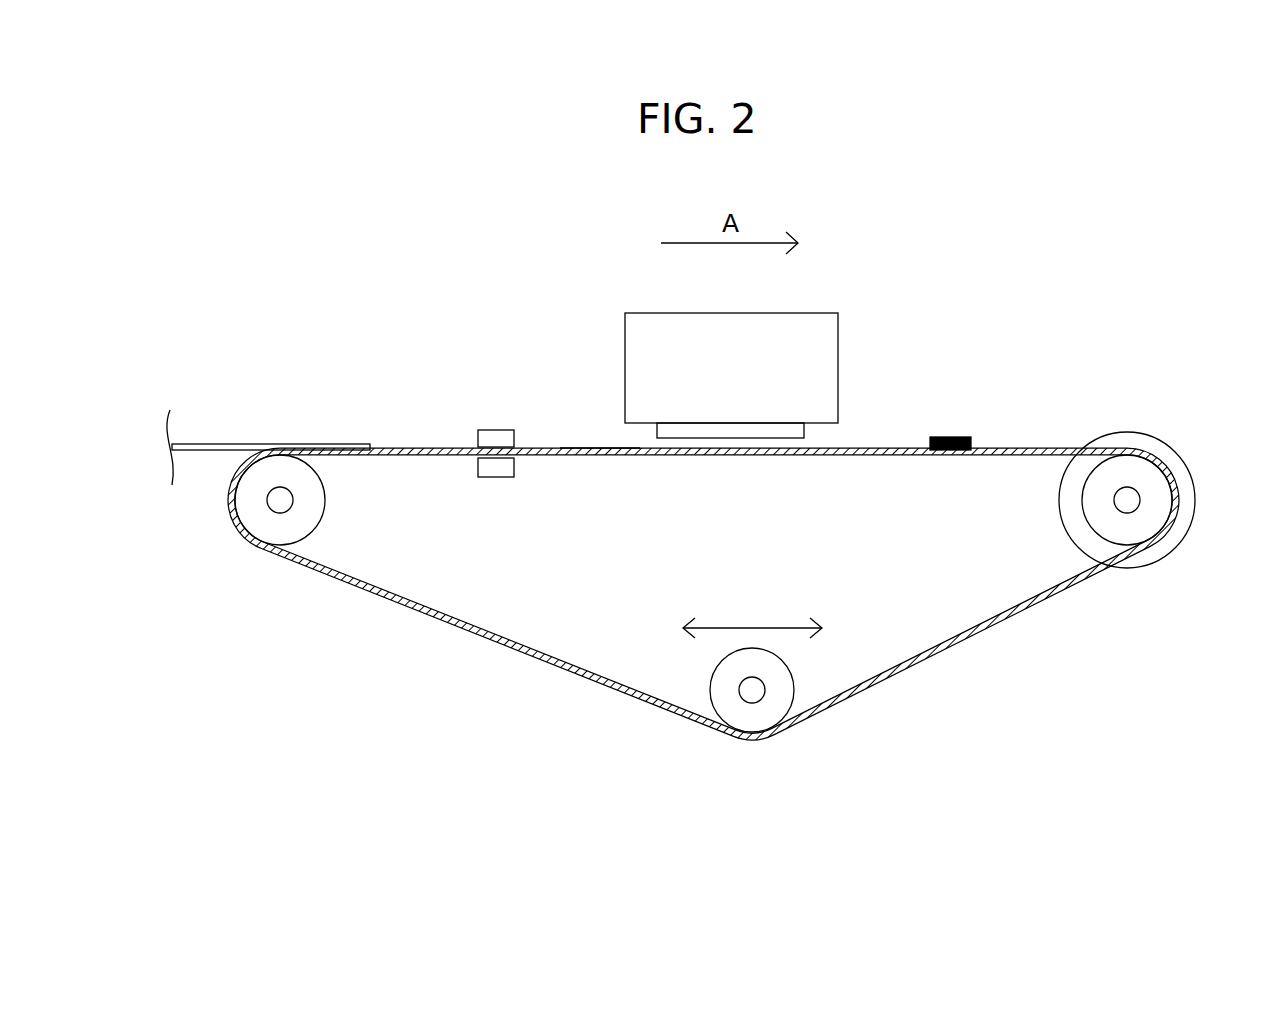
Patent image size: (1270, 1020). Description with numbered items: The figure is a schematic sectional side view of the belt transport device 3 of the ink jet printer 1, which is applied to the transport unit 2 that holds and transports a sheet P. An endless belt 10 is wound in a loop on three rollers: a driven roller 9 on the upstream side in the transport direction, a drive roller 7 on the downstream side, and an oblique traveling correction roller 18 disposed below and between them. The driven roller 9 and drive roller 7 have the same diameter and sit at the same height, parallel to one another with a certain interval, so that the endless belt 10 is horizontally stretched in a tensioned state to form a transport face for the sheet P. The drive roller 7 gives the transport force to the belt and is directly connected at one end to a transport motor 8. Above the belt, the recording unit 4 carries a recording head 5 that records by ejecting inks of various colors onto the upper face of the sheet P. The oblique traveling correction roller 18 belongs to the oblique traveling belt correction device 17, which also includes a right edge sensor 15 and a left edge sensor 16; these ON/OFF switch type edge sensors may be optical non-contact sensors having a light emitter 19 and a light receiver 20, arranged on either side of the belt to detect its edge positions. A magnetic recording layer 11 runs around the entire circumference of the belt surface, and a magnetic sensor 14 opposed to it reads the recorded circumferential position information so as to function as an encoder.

The ink jet printer 1 is at (252, 257).
The transport unit 2 is at (252, 257).
The belt transport device 3 is at (276, 282).
The recording unit 4 is at (806, 320).
The recording head 5 is at (740, 350).
The drive roller 7 is at (1092, 523).
The transport motor 8 is at (1183, 533).
The driven roller 9 is at (325, 498).
The endless belt 10 is at (529, 664).
The magnetic recording layer 11 is at (590, 448).
The magnetic sensor 14 is at (960, 424).
The right edge sensor 15 is at (466, 405).
The left edge sensor 16 is at (498, 379).
The oblique traveling belt correction device 17 is at (779, 681).
The oblique traveling correction roller 18 is at (795, 673).
The light emitter 19 is at (498, 430).
The light receiver 20 is at (478, 468).
The sheet P is at (331, 444).